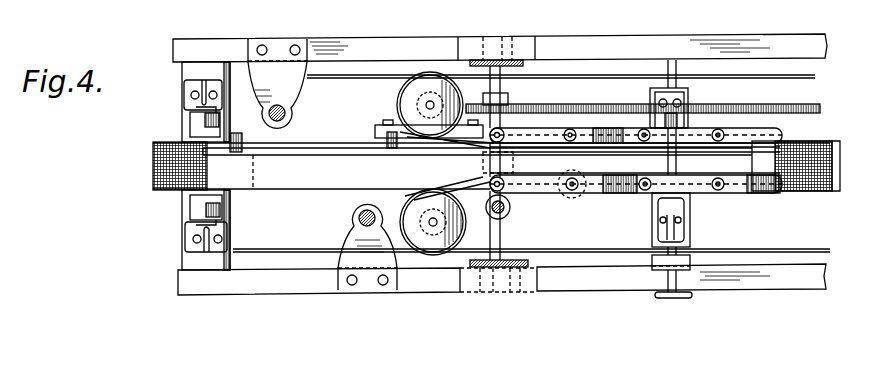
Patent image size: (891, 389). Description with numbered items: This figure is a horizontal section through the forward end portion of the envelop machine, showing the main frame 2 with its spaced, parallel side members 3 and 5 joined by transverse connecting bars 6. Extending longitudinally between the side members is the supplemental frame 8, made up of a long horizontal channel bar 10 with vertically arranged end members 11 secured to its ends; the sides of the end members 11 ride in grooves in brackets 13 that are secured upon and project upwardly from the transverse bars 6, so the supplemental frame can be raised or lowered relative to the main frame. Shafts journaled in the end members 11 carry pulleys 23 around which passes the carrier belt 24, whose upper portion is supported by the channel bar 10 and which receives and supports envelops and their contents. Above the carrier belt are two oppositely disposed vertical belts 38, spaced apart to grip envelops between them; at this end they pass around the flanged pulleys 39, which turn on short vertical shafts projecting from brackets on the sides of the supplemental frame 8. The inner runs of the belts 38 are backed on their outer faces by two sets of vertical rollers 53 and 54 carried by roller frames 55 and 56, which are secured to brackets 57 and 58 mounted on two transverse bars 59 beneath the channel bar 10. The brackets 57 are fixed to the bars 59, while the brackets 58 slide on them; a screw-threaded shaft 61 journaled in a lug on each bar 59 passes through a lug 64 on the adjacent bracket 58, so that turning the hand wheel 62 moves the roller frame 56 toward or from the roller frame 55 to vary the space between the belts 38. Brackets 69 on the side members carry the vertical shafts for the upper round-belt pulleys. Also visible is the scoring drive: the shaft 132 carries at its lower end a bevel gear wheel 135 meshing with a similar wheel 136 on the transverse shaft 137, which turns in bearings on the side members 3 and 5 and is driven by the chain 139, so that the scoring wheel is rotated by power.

The main frame 2 is at (219, 288).
The side member 3 is at (766, 40).
The side member 5 is at (765, 283).
The transverse connecting bar 6 is at (193, 258).
The supplemental frame 8 is at (260, 194).
The channel bar 10 is at (839, 146).
The end member 11 is at (193, 127).
The bracket 13 is at (190, 95).
The pulley 23 is at (170, 146).
The belt 24 is at (163, 171).
The vertical belt 38 is at (605, 173).
The pulley 39 is at (410, 105).
The vertical roller 53 is at (569, 131).
The vertical roller 54 is at (567, 193).
The roller frame 55 is at (536, 130).
The roller frame 56 is at (505, 190).
The bracket 57 is at (672, 94).
The bracket 58 is at (684, 203).
The bar 59 is at (655, 88).
The shaft 61 is at (666, 232).
The hand wheel 62 is at (664, 298).
The lug 64 is at (684, 240).
The bracket 69 is at (297, 92).
The shaft 132 is at (506, 215).
The bevel gear wheel 135 is at (504, 222).
The bevel gear wheel 136 is at (483, 165).
The transverse shaft 137 is at (500, 243).
The chain 139 is at (725, 108).